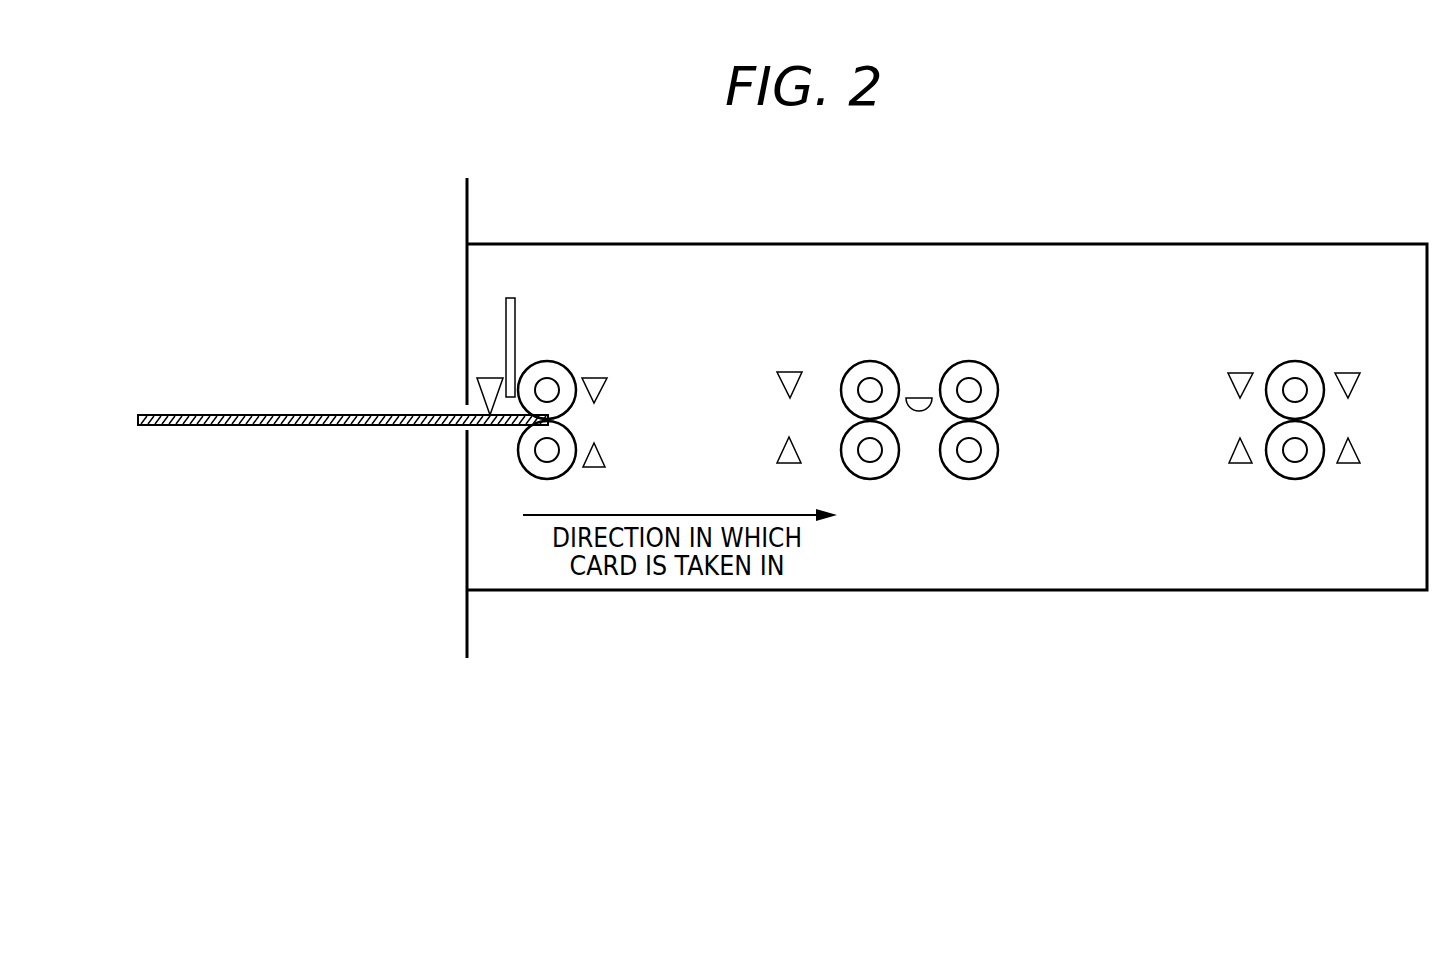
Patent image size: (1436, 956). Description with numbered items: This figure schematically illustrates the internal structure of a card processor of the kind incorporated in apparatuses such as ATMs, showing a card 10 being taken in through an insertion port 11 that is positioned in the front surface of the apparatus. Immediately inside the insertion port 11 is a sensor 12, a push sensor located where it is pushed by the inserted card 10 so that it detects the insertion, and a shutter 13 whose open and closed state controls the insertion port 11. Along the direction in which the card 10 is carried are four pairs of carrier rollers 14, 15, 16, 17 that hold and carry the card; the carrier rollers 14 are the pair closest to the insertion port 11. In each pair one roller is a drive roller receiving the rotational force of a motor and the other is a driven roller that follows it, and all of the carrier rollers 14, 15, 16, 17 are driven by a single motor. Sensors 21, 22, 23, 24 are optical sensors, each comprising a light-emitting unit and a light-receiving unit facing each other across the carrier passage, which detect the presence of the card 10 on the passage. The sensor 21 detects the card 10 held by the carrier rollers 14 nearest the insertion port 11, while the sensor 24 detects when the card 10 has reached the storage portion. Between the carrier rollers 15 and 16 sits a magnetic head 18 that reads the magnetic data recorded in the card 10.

The card 10 is at (277, 415).
The insertion port 11 is at (452, 402).
The sensor 12 is at (516, 346).
The shutter 13 is at (516, 305).
The carrier rollers 14 is at (557, 367).
The carrier rollers 15 is at (877, 367).
The carrier rollers 16 is at (982, 373).
The carrier rollers 17 is at (1300, 368).
The magnetic head 18 is at (920, 398).
The sensor 21 is at (603, 383).
The sensor 22 is at (797, 375).
The sensor 23 is at (1252, 372).
The sensor 24 is at (1357, 377).